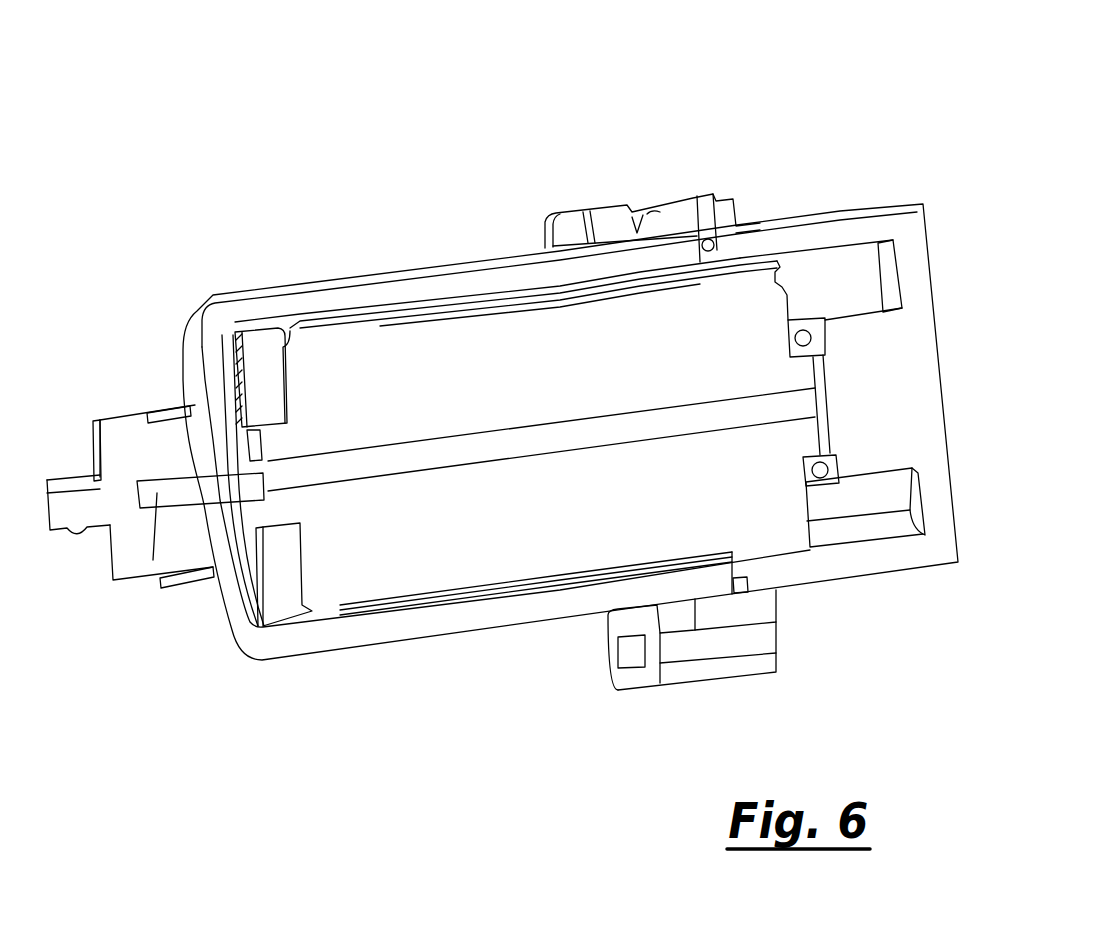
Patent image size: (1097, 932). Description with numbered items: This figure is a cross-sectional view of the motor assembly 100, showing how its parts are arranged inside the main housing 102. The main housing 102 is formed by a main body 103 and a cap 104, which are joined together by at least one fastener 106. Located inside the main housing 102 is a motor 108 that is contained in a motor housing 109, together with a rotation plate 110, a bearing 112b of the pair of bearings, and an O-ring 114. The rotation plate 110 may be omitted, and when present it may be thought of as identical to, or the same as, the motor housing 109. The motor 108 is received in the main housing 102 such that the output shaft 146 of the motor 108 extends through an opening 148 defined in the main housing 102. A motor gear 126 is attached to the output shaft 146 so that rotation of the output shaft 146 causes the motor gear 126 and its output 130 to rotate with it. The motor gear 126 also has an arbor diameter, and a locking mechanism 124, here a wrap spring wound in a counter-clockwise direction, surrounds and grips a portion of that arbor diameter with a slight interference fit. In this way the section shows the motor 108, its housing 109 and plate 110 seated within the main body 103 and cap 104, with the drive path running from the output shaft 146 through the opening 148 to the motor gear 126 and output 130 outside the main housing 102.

The motor assembly 100 is at (798, 45).
The main housing 102 is at (750, 120).
The main body 103 is at (492, 262).
The cap 104 is at (893, 202).
The fastener 106 is at (640, 676).
The motor 108 is at (525, 538).
The motor housing 109 is at (413, 311).
The rotation plate 110 is at (263, 352).
The bearing 112b is at (802, 327).
The O-ring 114 is at (705, 239).
The locking mechanism 124 is at (192, 582).
The motor gear 126 is at (151, 548).
The output 130 is at (70, 532).
The output shaft 146 is at (155, 470).
The opening 148 is at (200, 465).